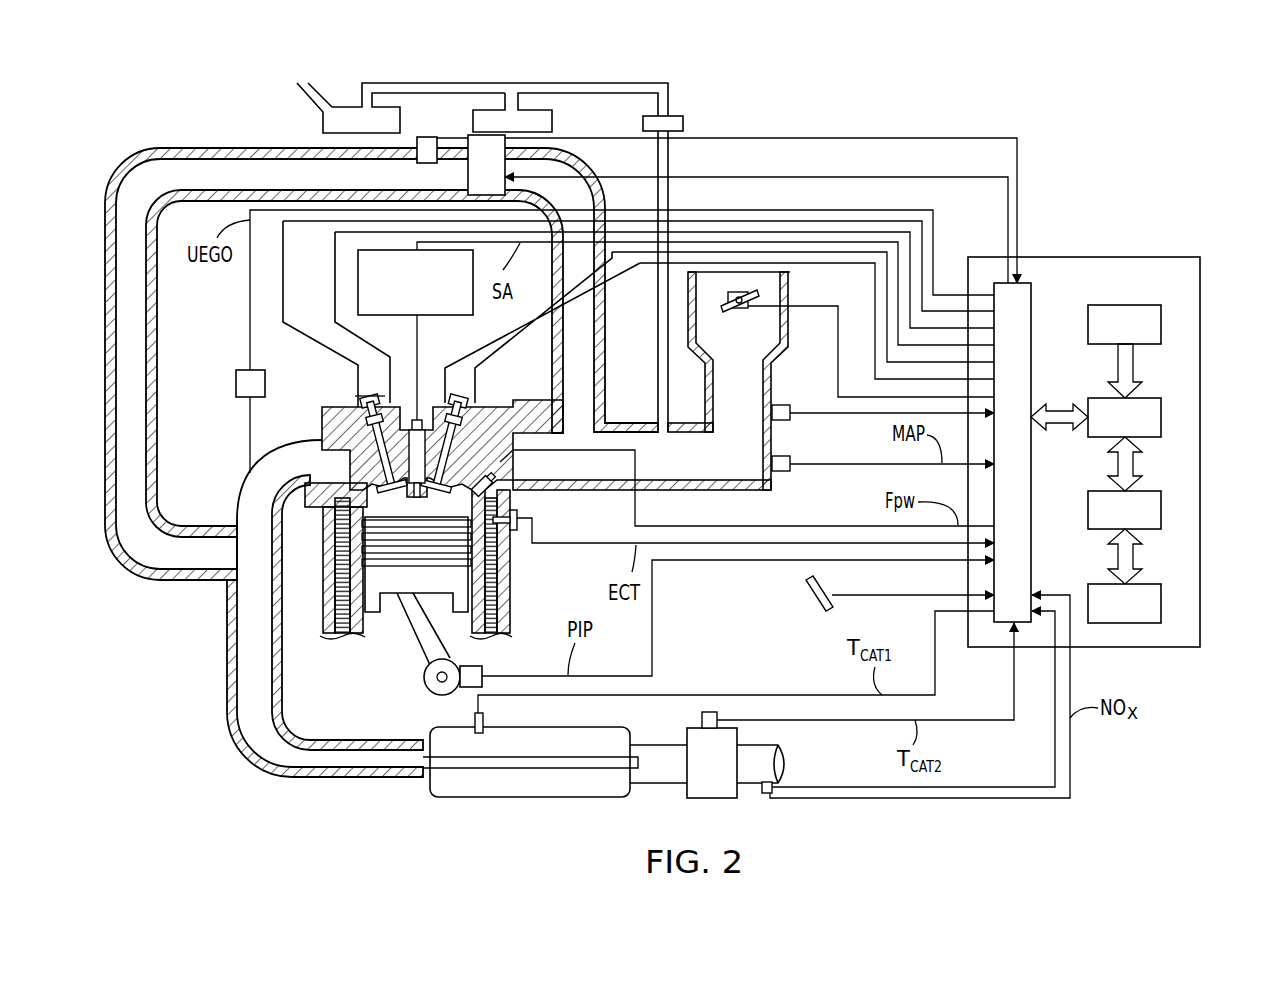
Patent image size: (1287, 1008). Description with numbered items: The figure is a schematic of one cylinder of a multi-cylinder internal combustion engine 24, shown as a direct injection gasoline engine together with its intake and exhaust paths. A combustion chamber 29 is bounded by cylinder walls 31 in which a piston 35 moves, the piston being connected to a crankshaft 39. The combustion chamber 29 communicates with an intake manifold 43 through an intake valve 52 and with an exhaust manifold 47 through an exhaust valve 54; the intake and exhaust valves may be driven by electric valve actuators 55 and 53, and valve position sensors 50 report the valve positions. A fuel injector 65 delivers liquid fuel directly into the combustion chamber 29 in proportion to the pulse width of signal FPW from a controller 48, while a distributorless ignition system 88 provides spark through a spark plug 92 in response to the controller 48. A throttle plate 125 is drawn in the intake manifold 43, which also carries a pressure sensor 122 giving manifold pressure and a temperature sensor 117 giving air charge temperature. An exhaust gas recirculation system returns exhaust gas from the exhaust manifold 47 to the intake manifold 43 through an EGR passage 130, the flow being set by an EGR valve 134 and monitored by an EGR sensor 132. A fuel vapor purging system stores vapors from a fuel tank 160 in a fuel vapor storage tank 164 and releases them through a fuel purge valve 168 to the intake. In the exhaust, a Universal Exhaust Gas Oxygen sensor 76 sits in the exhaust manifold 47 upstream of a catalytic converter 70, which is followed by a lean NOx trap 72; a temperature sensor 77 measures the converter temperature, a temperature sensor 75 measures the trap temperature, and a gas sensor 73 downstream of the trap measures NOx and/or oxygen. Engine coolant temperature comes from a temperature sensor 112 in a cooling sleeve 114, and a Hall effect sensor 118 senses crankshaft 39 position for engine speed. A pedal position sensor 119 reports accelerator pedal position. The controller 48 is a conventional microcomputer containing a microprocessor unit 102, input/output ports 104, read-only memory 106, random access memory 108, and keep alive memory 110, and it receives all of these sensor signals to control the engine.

The internal combustion engine 24 is at (321, 401).
The combustion chamber 29 is at (393, 502).
The cylinder walls 31 is at (363, 625).
The piston 35 is at (403, 593).
The crankshaft 39 is at (430, 675).
The intake manifold 43 is at (690, 468).
The exhaust manifold 47 is at (253, 497).
The controller 48 is at (1083, 257).
The valve position sensors 50 is at (379, 387).
The intake valve 52 is at (500, 405).
The electric valve actuator 53 is at (350, 400).
The exhaust valve 54 is at (370, 477).
The electric valve actuator 55 is at (478, 403).
The fuel injector 65 is at (500, 480).
The catalytic converter 70 is at (548, 728).
The lean NOx trap 72 is at (687, 790).
The gas sensor 73 is at (765, 793).
The temperature sensor 75 is at (702, 720).
The Universal Exhaust Gas Oxygen (UEGO) sensor 76 is at (244, 368).
The temperature sensor 77 is at (470, 718).
The distributorless ignition system 88 is at (368, 250).
The spark plug 92 is at (407, 410).
The microprocessor unit 102 is at (1161, 415).
The input/output ports 104 is at (1031, 347).
The read-only memory 106 is at (1161, 323).
The random access memory 108 is at (1161, 507).
The keep alive memory 110 is at (1161, 600).
The temperature sensor 112 is at (518, 515).
The cooling sleeve 114 is at (342, 648).
The temperature sensor 117 is at (798, 426).
The Hall effect sensor 118 is at (485, 670).
The pedal position sensor 119 is at (809, 608).
The pressure sensor 122 is at (783, 473).
The throttle plate 125 is at (767, 291).
The EGR passage 130 is at (258, 170).
The EGR sensor 132 is at (425, 165).
The EGR valve 134 is at (498, 190).
The fuel tank 160 is at (402, 120).
The fuel vapor storage tank 164 is at (553, 122).
The fuel purge valve 168 is at (683, 124).